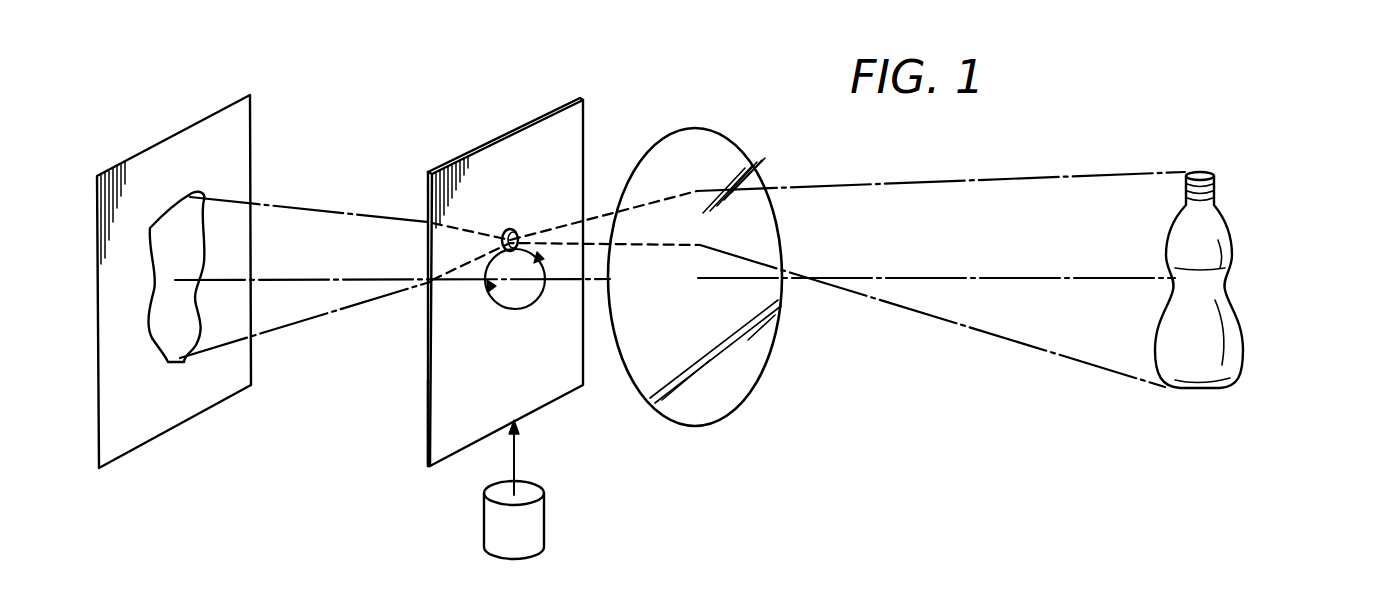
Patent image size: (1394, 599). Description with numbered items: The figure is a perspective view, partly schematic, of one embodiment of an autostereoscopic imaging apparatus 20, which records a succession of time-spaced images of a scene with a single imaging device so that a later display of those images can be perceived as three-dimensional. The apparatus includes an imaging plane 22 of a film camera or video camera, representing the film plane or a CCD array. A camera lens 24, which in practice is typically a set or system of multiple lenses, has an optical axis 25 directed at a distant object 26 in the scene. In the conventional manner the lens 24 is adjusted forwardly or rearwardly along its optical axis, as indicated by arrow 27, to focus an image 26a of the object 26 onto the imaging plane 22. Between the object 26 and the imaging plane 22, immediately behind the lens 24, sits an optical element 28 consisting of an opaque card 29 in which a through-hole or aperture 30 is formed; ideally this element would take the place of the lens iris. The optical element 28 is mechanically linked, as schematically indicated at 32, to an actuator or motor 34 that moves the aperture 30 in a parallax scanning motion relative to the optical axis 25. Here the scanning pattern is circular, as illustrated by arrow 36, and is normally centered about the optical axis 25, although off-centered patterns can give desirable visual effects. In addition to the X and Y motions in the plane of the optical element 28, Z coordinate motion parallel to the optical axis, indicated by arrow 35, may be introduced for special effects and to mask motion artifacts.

The autostereoscopic imaging apparatus 20 is at (255, 490).
The imaging plane 22 is at (204, 392).
The camera lens 24 is at (735, 365).
The optical axis 25 is at (988, 278).
The distant object 26 is at (1228, 268).
The image of object 26a is at (130, 270).
The arrow indicating lens adjustment 27 is at (650, 450).
The optical element 28 is at (527, 379).
The opaque card 29 is at (428, 425).
The aperture 30 is at (515, 228).
The mechanical link 32 is at (520, 455).
The actuator or motor 34 is at (497, 533).
The arrow indicating Z coordinate motion 35 is at (400, 128).
The arrow indicating circular parallax scanning pattern 36 is at (500, 312).